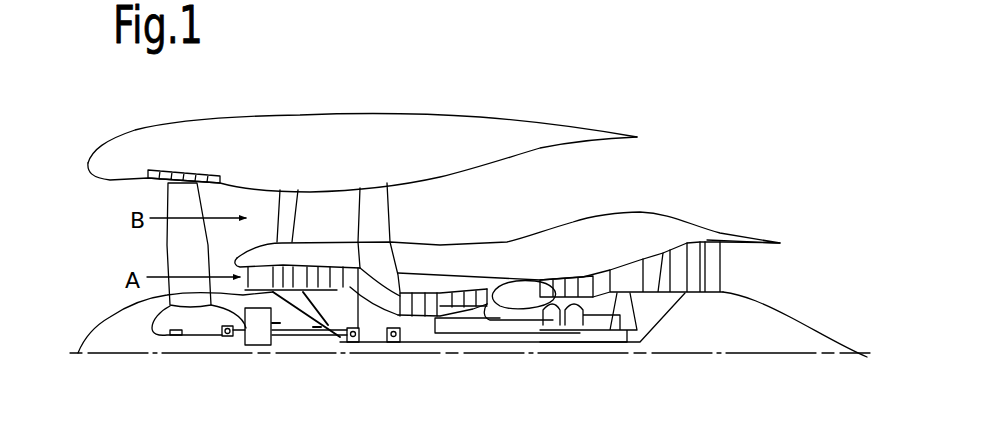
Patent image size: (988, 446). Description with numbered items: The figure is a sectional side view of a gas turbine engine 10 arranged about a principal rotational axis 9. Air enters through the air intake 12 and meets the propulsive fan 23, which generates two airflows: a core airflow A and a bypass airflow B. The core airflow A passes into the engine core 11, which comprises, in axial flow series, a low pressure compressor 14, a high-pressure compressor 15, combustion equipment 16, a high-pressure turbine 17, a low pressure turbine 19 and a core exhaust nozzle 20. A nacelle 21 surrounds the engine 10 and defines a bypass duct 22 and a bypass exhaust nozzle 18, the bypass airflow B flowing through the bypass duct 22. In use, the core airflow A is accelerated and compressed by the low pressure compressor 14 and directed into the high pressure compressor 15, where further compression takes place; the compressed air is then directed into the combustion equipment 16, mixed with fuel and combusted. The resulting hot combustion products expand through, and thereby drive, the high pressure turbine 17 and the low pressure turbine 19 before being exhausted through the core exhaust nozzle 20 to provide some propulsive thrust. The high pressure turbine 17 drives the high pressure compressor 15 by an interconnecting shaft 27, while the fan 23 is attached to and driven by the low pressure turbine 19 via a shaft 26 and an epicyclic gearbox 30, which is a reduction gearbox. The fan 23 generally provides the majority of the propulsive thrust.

The principal rotational axis 9 is at (688, 355).
The gas turbine engine 10 is at (146, 125).
The core 11 is at (504, 261).
The air intake 12 is at (100, 208).
The low pressure compressor 14 is at (320, 262).
The high-pressure compressor 15 is at (450, 297).
The combustion equipment 16 is at (527, 298).
The high-pressure turbine 17 is at (573, 288).
The bypass exhaust nozzle 18 is at (689, 173).
The low pressure turbine 19 is at (695, 260).
The core exhaust nozzle 20 is at (757, 275).
The nacelle 21 is at (380, 130).
The bypass duct 22 is at (613, 190).
The propulsive fan 23 is at (172, 248).
The shaft 26 is at (447, 343).
The interconnecting shaft 27 is at (485, 330).
The epicyclic gearbox 30 is at (260, 330).